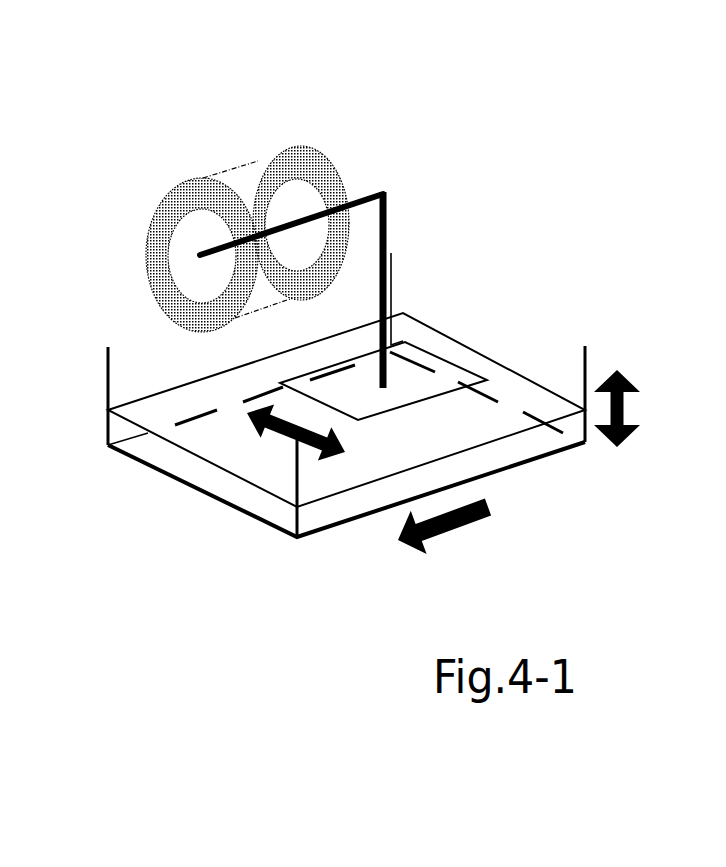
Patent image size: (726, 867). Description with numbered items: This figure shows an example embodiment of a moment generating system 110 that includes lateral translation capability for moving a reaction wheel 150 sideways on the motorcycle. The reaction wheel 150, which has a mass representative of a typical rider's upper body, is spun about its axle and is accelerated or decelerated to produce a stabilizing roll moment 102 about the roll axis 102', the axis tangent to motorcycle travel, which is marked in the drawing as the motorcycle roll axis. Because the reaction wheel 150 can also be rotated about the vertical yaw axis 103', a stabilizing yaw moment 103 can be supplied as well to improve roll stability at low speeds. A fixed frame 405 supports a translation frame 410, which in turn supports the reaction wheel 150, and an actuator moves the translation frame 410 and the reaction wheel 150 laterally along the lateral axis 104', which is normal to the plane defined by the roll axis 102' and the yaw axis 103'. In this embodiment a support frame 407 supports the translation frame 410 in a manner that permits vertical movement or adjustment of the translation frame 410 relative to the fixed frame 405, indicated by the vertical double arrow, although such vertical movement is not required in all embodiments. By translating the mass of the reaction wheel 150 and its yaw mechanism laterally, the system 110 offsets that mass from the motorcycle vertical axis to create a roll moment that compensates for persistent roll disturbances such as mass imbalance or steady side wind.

The stabilizing roll moment 102 is at (217, 207).
The reaction wheel 150 is at (322, 158).
The yaw axis 103' is at (330, 267).
The stabilizing yaw moment 103 is at (419, 266).
The support frame 407 is at (529, 371).
The moment generating system 110 is at (497, 112).
The translation frame 410 is at (464, 352).
The lateral axis 104' is at (265, 473).
The fixed frame 405 is at (583, 466).
The roll axis 102' is at (476, 485).